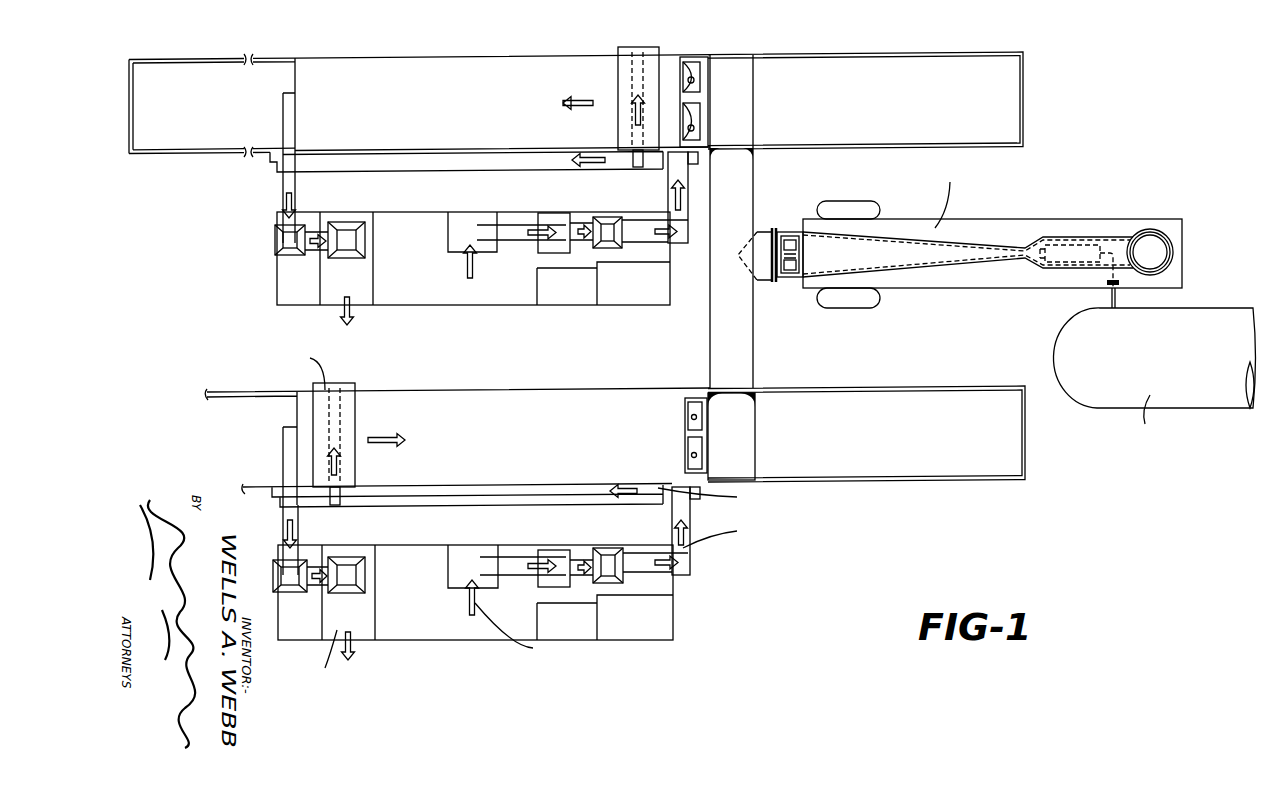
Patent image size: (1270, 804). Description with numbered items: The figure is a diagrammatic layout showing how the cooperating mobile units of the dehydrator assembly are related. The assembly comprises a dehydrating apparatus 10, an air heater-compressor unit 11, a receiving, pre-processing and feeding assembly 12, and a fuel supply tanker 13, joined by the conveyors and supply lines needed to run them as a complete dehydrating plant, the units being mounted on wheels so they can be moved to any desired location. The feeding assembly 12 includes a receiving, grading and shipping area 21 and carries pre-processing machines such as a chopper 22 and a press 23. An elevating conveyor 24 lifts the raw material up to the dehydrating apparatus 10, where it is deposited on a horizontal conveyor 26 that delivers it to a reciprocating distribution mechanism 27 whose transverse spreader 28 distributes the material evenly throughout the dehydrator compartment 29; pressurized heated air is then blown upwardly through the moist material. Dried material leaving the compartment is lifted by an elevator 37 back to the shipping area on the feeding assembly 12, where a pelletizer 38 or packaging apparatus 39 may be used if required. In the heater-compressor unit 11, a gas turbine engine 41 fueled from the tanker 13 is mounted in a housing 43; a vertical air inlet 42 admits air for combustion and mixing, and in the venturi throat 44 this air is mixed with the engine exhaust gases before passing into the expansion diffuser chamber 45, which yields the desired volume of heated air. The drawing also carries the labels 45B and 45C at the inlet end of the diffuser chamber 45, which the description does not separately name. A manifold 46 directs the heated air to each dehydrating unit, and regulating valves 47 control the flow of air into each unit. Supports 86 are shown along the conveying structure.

The dehydrating apparatus 10 is at (481, 52).
The air heater-compressor unit 11 is at (1008, 213).
The receiving, pre-processing and feeding assembly 12 is at (487, 305).
The fuel supply tanker 13 is at (1168, 361).
The receiving, grading and shipping area 21 is at (445, 291).
The chopper 22 is at (556, 214).
The press 23 is at (616, 215).
The elevating conveyor 24 is at (668, 180).
The horizontal conveyor 26 is at (470, 162).
The reciprocating distribution mechanism 27 is at (618, 62).
The transverse spreader 28 is at (632, 125).
The dehydrator compartment 29 is at (475, 111).
The elevator 37 is at (283, 190).
The pelletizer 38 is at (275, 242).
The packaging apparatus 39 is at (347, 222).
The gas turbine engine 41 is at (1070, 233).
The vertical air inlet 42 is at (1172, 254).
The housing 43 is at (1078, 275).
The venturi throat 44 is at (1015, 260).
The expansion diffuser chamber 45 is at (865, 260).
The inlet vane 45B is at (790, 240).
The inlet vane 45C is at (790, 272).
The manifold 46 is at (752, 188).
The regulating valve 47 is at (697, 80).
The supports 86 is at (190, 53).